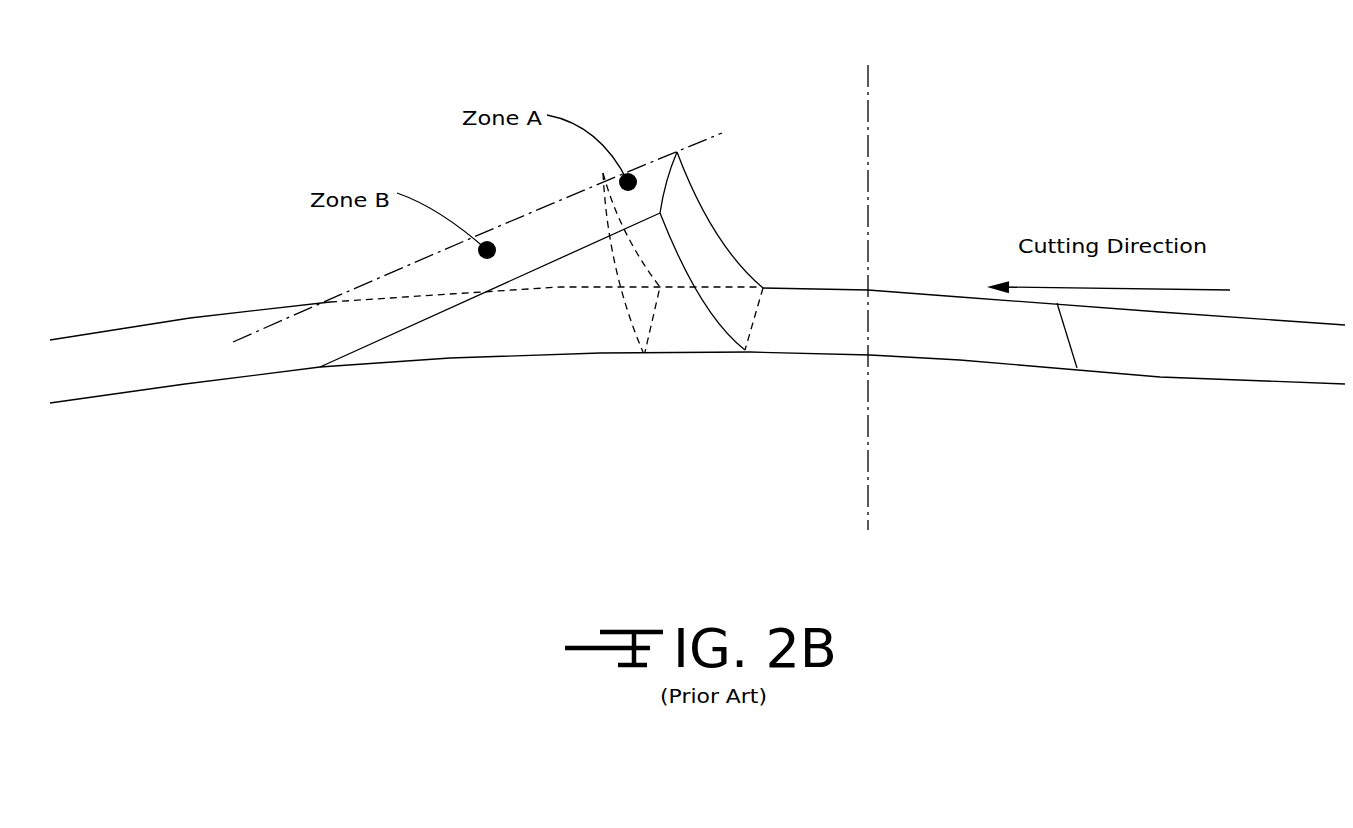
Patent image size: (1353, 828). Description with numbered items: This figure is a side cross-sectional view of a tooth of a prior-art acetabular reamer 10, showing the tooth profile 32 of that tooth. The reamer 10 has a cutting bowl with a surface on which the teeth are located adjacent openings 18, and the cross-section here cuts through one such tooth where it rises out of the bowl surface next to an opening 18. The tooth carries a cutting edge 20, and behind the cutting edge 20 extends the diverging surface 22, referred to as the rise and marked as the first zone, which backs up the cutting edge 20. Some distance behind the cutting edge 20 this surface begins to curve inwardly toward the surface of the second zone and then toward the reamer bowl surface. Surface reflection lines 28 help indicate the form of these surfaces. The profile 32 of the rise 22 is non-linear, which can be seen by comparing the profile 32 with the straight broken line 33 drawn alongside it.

The acetabular reamer 10 is at (187, 358).
The openings 18 is at (1003, 333).
The cutting edge 20 is at (723, 243).
The diverging surface 22 is at (443, 283).
The surface reflection lines 28 is at (657, 330).
The tooth profile 32 is at (576, 167).
The broken line 33 is at (707, 135).